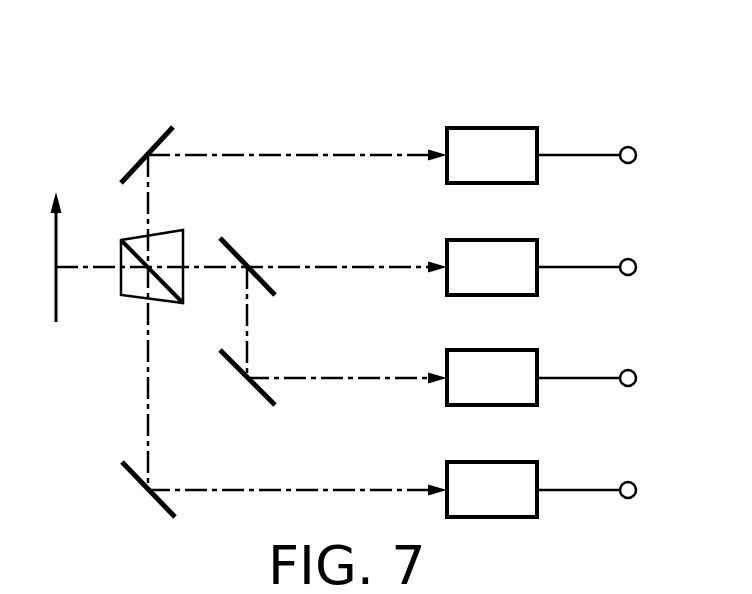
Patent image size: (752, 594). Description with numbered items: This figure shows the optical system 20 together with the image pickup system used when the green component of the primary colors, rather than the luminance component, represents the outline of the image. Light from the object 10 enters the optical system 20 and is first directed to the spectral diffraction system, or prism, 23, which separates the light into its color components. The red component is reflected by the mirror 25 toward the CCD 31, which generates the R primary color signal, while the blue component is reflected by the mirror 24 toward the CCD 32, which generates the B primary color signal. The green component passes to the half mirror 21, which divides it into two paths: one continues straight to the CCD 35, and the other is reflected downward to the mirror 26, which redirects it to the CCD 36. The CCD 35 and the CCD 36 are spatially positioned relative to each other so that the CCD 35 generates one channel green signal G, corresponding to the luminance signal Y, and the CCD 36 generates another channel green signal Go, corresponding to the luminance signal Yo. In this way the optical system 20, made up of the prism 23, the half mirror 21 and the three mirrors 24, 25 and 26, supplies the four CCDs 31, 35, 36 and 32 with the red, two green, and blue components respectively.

The optical system 20 is at (96, 110).
The object / original image 10 is at (56, 296).
The mirror 25 is at (150, 146).
The spectral diffraction system (prism) 23 is at (184, 242).
The half mirror 21 is at (237, 252).
The mirror 26 is at (255, 393).
The mirror 24 is at (134, 477).
The CCD 31 is at (467, 128).
The CCD 35 is at (467, 240).
The CCD 36 is at (467, 350).
The CCD 32 is at (467, 462).